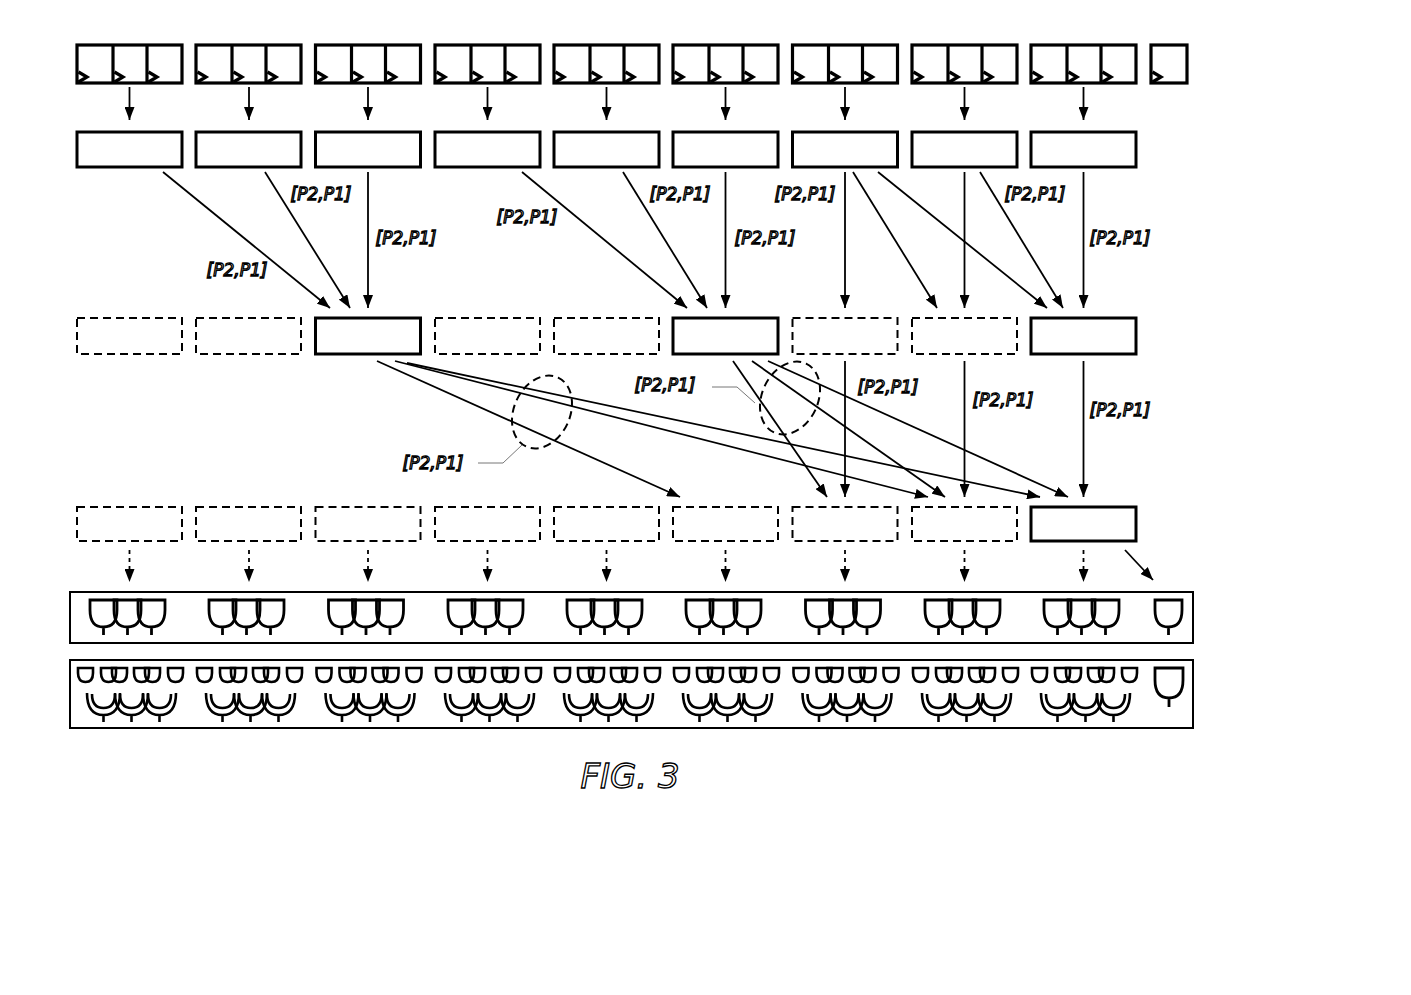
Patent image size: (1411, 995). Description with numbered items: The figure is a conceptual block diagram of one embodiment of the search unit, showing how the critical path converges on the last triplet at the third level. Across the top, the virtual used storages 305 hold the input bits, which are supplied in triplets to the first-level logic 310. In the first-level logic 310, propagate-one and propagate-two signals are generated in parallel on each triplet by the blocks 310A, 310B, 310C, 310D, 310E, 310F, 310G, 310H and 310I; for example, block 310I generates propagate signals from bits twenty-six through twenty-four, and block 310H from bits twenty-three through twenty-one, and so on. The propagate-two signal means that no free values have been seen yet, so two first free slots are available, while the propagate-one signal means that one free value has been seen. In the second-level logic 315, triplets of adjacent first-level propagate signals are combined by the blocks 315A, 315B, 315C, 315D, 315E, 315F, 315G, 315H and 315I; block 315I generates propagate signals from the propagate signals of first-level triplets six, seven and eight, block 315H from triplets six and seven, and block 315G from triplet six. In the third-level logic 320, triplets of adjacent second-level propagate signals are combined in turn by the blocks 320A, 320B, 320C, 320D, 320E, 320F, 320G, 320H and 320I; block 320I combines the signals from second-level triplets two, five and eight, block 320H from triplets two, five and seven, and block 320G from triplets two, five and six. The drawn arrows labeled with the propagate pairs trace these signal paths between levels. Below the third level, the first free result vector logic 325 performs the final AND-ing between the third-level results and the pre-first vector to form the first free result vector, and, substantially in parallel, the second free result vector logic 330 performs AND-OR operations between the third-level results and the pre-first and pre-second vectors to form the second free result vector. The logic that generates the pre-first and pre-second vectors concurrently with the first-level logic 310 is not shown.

The virtual used storages 305 is at (731, 54).
The level-1 logic 310 is at (717, 139).
The level-1 logic block 310A is at (129, 149).
The level-1 logic block 310B is at (248, 149).
The level-1 logic block 310C is at (368, 149).
The level-1 logic block 310D is at (487, 149).
The level-1 logic block 310E is at (606, 149).
The level-1 logic block 310F is at (725, 149).
The level-1 logic block 310G is at (845, 149).
The level-1 logic block 310H is at (964, 149).
The level-1 logic block 310I is at (1083, 149).
The level-2 logic 315 is at (717, 326).
The level-2 logic block 315A is at (129, 336).
The level-2 logic block 315B is at (248, 336).
The level-2 logic block 315C is at (368, 336).
The level-2 logic block 315D is at (487, 336).
The level-2 logic block 315E is at (606, 336).
The level-2 logic block 315F is at (725, 336).
The level-2 logic block 315G is at (845, 336).
The level-2 logic block 315H is at (964, 336).
The level-2 logic block 315I is at (1083, 336).
The level-3 logic 320 is at (733, 520).
The level-3 logic block 320A is at (129, 524).
The level-3 logic block 320B is at (248, 524).
The level-3 logic block 320C is at (368, 524).
The level-3 logic block 320D is at (487, 524).
The level-3 logic block 320E is at (606, 524).
The level-3 logic block 320F is at (725, 524).
The level-3 logic block 320G is at (845, 524).
The level-3 logic block 320H is at (964, 524).
The level-3 logic block 320I is at (1083, 524).
The first free result vector logic 325 is at (722, 626).
The second free result vector logic 330 is at (729, 698).